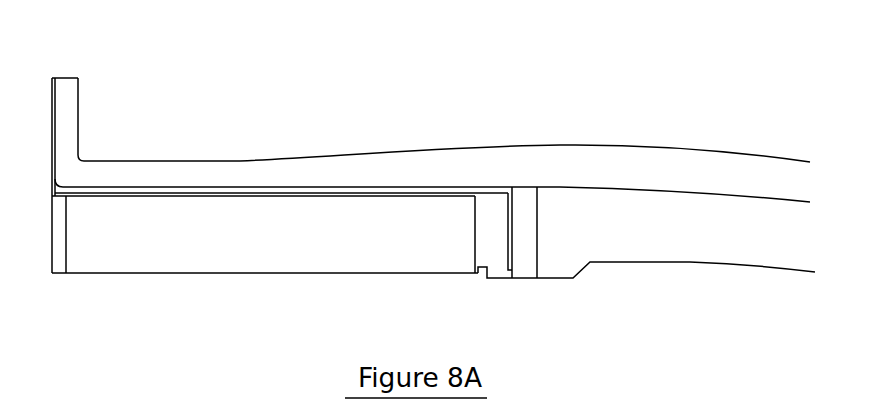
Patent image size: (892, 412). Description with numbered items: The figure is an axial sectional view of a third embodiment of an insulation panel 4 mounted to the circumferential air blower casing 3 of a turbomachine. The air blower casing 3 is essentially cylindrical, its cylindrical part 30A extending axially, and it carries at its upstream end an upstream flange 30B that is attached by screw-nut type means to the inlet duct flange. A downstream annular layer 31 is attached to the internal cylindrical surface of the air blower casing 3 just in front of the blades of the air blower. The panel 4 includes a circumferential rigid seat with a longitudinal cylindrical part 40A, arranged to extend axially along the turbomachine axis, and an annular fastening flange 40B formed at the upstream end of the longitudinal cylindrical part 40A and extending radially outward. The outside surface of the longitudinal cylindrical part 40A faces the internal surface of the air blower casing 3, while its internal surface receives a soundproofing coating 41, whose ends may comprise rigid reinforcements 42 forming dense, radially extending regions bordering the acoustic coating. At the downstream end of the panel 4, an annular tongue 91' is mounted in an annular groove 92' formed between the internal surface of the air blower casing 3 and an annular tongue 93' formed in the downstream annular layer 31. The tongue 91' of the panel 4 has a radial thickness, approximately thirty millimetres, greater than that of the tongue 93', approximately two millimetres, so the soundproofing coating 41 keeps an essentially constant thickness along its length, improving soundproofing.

The air blower casing 3 is at (612, 146).
The downstream annular layer 31 is at (678, 207).
The panel 4 is at (124, 264).
The soundproofing coating 41 is at (167, 237).
The rigid reinforcements 42 is at (58, 230).
The air blower casing cylindrical part 30A is at (168, 172).
The upstream flange 30B is at (58, 112).
The longitudinal cylindrical part 40A is at (228, 194).
The annular fastening flange 40B is at (52, 128).
The annular tongue 91' is at (478, 153).
The annular groove 92' is at (392, 247).
The annular tongue 93' is at (646, 248).